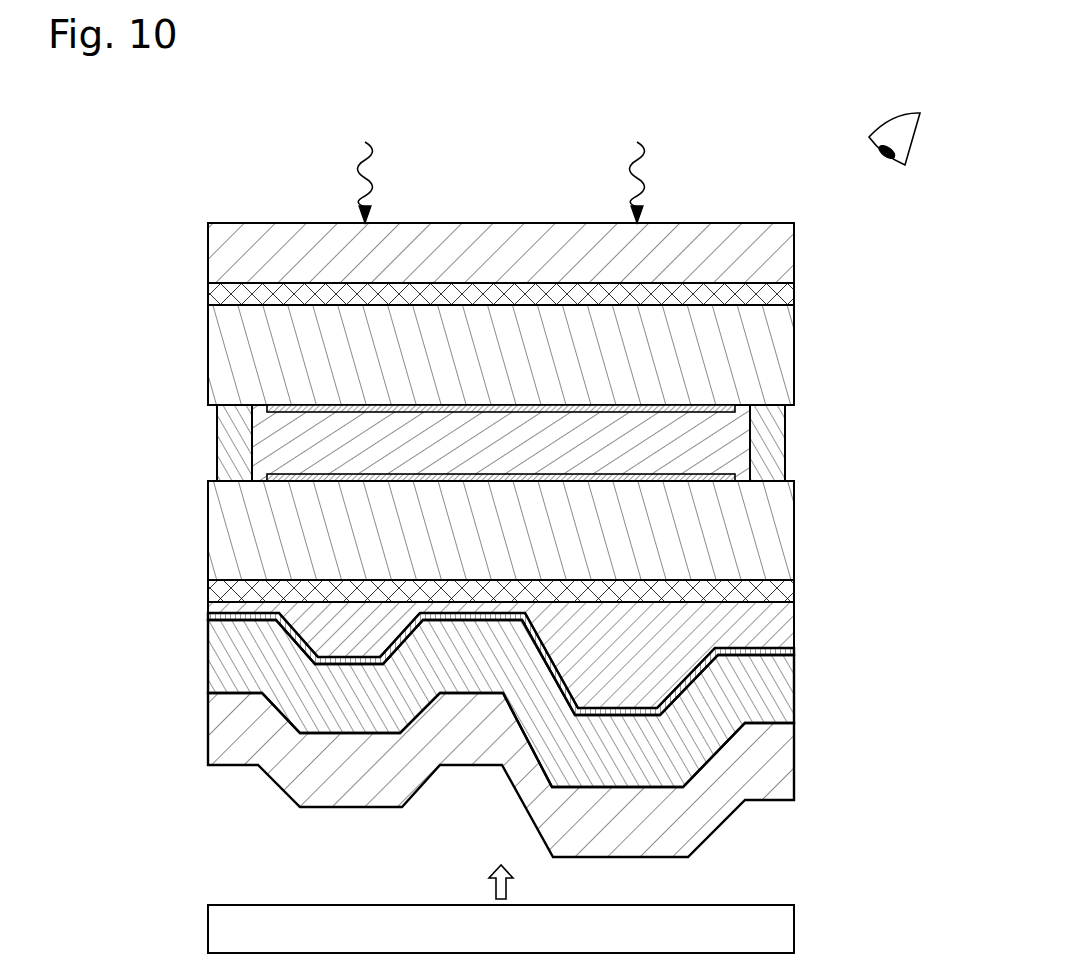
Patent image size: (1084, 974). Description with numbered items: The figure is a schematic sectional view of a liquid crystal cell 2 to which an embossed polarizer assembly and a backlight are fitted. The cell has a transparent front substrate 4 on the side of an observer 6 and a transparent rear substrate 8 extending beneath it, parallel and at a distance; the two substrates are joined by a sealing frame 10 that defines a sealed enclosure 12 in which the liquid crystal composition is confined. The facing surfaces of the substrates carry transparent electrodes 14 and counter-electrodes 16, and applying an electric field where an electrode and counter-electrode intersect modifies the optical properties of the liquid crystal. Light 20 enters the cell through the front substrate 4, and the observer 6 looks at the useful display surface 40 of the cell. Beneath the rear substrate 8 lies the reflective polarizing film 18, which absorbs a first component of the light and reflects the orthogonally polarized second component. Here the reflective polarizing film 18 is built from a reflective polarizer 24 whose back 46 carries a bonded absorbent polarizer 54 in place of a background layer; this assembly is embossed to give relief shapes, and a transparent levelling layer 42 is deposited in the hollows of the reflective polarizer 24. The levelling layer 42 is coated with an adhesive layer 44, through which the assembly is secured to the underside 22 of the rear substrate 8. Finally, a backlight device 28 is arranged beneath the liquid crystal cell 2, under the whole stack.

The liquid crystal cell 2 is at (112, 307).
The front substrate 4 is at (774, 332).
The observer 6 is at (912, 151).
The rear substrate 8 is at (774, 509).
The sealing frame 10 is at (762, 421).
The sealed enclosure 12 is at (507, 443).
The electrodes 14 is at (287, 410).
The counter-electrodes 16 is at (290, 478).
The reflective polarizing film 18 is at (112, 602).
The light 20 is at (360, 150).
The underside of rear substrate 22 is at (328, 583).
The reflective polarizer 24 is at (762, 670).
The backlight device 28 is at (762, 931).
The useful display surface 40 is at (794, 215).
The transparent levelling layer 42 is at (787, 622).
The adhesive layer 44 is at (785, 652).
The back of reflective polarizer 46 is at (333, 725).
The absorbent polarizer 54 is at (762, 748).